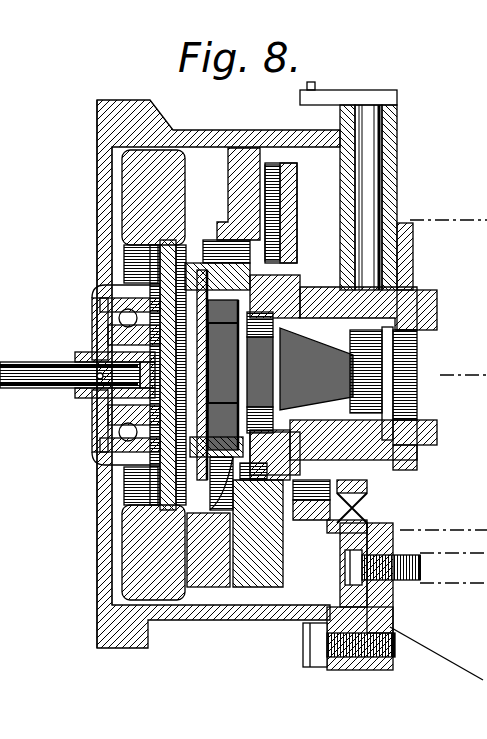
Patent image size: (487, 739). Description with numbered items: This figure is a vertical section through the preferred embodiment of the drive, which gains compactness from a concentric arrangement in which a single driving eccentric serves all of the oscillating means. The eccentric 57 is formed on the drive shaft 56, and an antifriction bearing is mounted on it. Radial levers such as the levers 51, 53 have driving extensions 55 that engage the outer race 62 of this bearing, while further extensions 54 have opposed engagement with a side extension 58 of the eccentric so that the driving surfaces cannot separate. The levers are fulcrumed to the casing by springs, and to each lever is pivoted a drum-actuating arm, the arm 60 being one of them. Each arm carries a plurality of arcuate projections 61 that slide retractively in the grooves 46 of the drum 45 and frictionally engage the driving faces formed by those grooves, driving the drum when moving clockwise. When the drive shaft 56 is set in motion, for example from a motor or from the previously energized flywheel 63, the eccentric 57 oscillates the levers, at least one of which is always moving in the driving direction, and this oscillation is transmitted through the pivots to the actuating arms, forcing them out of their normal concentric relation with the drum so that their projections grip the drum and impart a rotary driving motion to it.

The drum 45 is at (486, 60).
The grooves 46 is at (284, 290).
The radial lever 51 is at (145, 270).
The radial lever 53 is at (195, 432).
The further extensions 54 is at (172, 322).
The driving extensions 55 is at (197, 257).
The drive shaft 56 is at (77, 367).
The eccentric 57 is at (300, 320).
The side extension 58 is at (115, 392).
The drum-actuating arm 60 is at (215, 257).
The arcuate projections 61 is at (270, 508).
The outer race 62 is at (292, 225).
The flywheel 63 is at (132, 562).